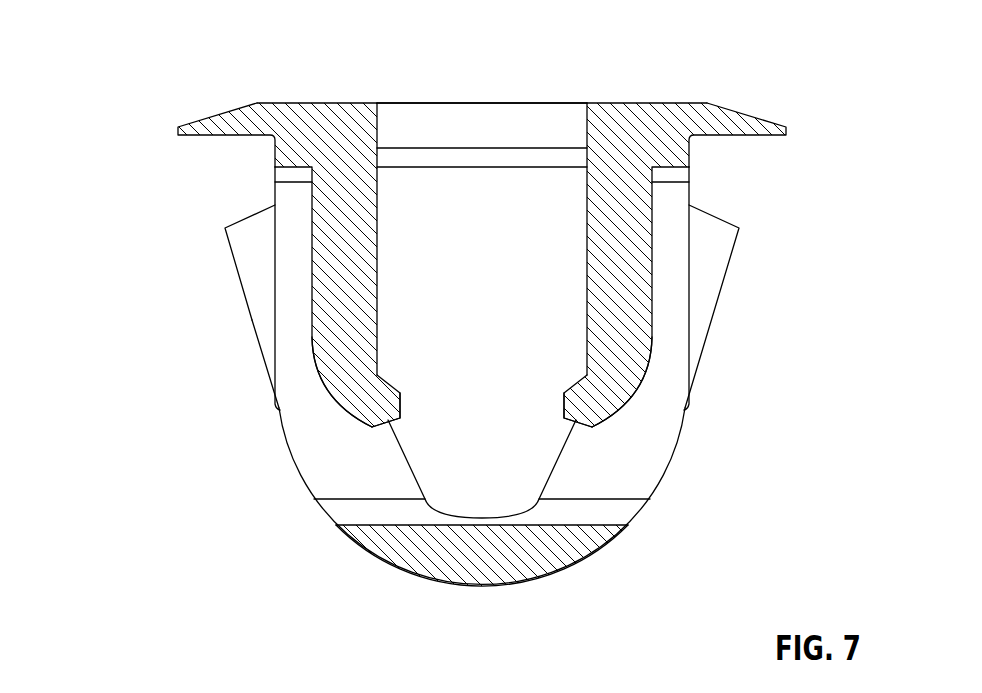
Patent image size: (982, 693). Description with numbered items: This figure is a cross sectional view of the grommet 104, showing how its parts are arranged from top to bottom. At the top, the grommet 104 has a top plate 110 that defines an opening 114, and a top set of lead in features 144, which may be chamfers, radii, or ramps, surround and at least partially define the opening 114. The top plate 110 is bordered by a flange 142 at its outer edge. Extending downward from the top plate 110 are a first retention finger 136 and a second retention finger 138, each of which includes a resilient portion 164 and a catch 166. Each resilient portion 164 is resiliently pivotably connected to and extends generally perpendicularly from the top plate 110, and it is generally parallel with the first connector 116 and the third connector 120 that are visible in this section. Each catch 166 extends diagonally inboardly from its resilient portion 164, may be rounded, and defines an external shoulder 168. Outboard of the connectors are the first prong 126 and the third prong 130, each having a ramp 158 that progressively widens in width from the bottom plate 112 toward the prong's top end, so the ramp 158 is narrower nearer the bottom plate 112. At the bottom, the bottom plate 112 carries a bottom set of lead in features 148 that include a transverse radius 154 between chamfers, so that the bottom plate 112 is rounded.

The grommet 104 is at (125, 42).
The top plate 110 is at (635, 112).
The bottom plate 112 is at (647, 473).
The opening 114 is at (448, 116).
The first connector 116 is at (300, 258).
The third connector 120 is at (668, 216).
The first prong 126 is at (253, 232).
The third prong 130 is at (727, 248).
The first retention finger 136 is at (347, 283).
The second retention finger 138 is at (630, 283).
The flange 142 is at (765, 128).
The top set of lead in features 144 is at (529, 116).
The bottom set of lead in features 148 is at (336, 593).
The transverse radius 154 is at (577, 550).
The ramp 158 is at (238, 290).
The resilient portion 164 is at (370, 258).
The catch 166 is at (400, 405).
The external shoulder 168 is at (335, 378).